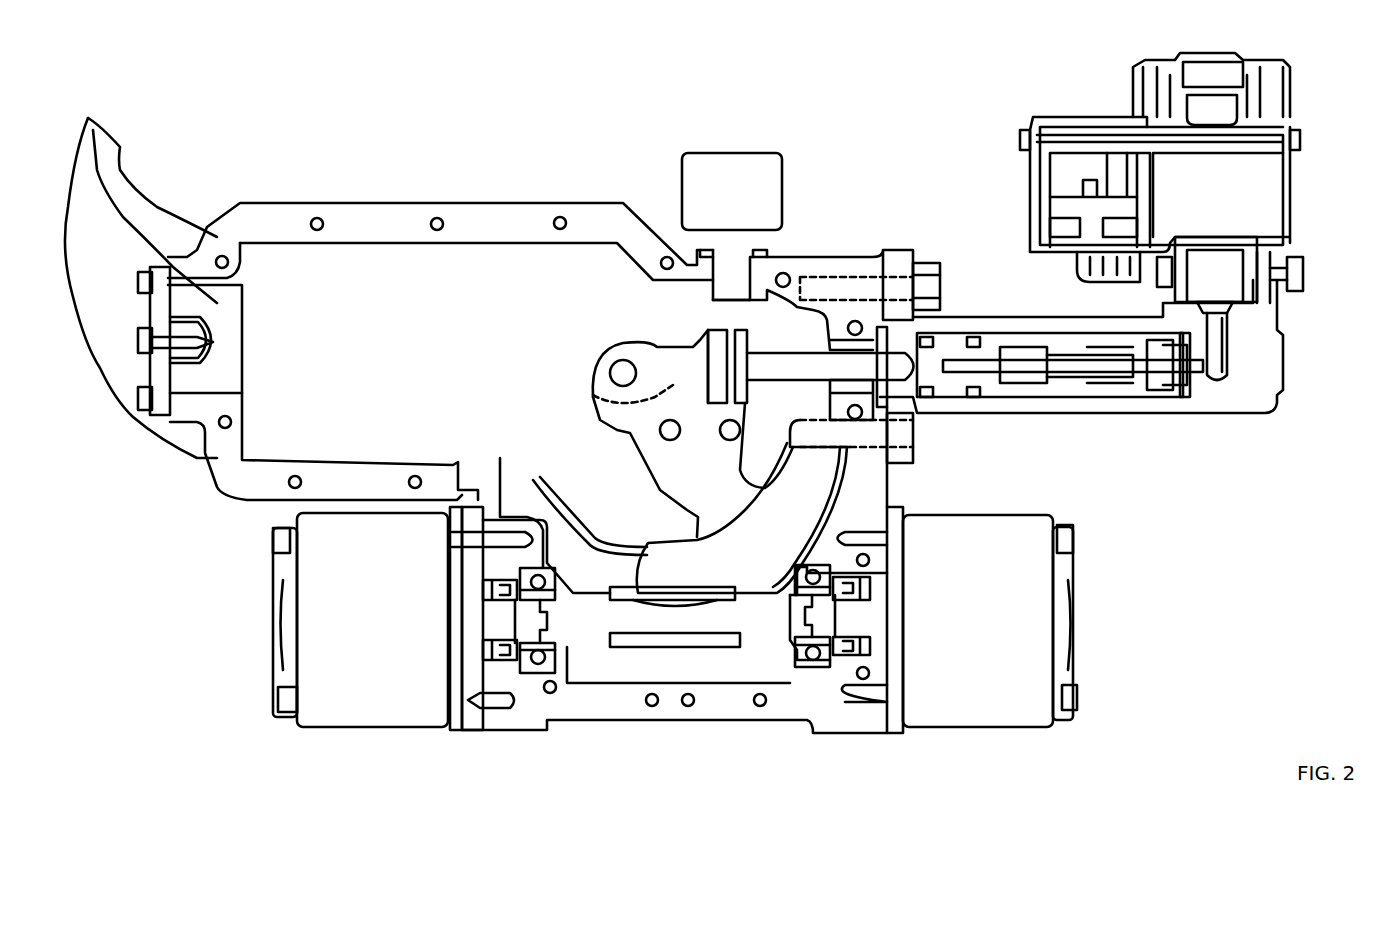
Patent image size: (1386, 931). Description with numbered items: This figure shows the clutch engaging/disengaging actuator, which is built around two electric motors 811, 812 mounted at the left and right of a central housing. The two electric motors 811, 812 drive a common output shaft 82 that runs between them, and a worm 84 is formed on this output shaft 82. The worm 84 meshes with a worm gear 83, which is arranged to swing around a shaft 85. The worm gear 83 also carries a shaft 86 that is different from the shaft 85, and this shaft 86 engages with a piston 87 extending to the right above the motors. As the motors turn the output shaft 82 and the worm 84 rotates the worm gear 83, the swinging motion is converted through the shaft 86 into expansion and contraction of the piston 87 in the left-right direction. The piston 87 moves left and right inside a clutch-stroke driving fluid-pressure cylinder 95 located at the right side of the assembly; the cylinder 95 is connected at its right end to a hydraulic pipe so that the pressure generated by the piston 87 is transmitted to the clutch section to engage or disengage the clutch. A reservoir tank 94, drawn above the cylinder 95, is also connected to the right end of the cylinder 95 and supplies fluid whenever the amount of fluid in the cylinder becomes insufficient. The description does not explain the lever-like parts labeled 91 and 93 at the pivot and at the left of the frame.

The output shaft 82 is at (773, 623).
The worm gear 83 is at (667, 570).
The worm 84 is at (665, 645).
The shaft 85 is at (670, 430).
The shaft 86 is at (627, 360).
The piston 87 is at (863, 363).
The pivot lever 91 is at (622, 368).
The locking hook lever 93 is at (88, 118).
The reservoir tank 94 is at (1292, 100).
The clutch-stroke driving fluid-pressure cylinder 95 is at (1125, 397).
The electric motor 811 is at (358, 710).
The electric motor 812 is at (968, 712).